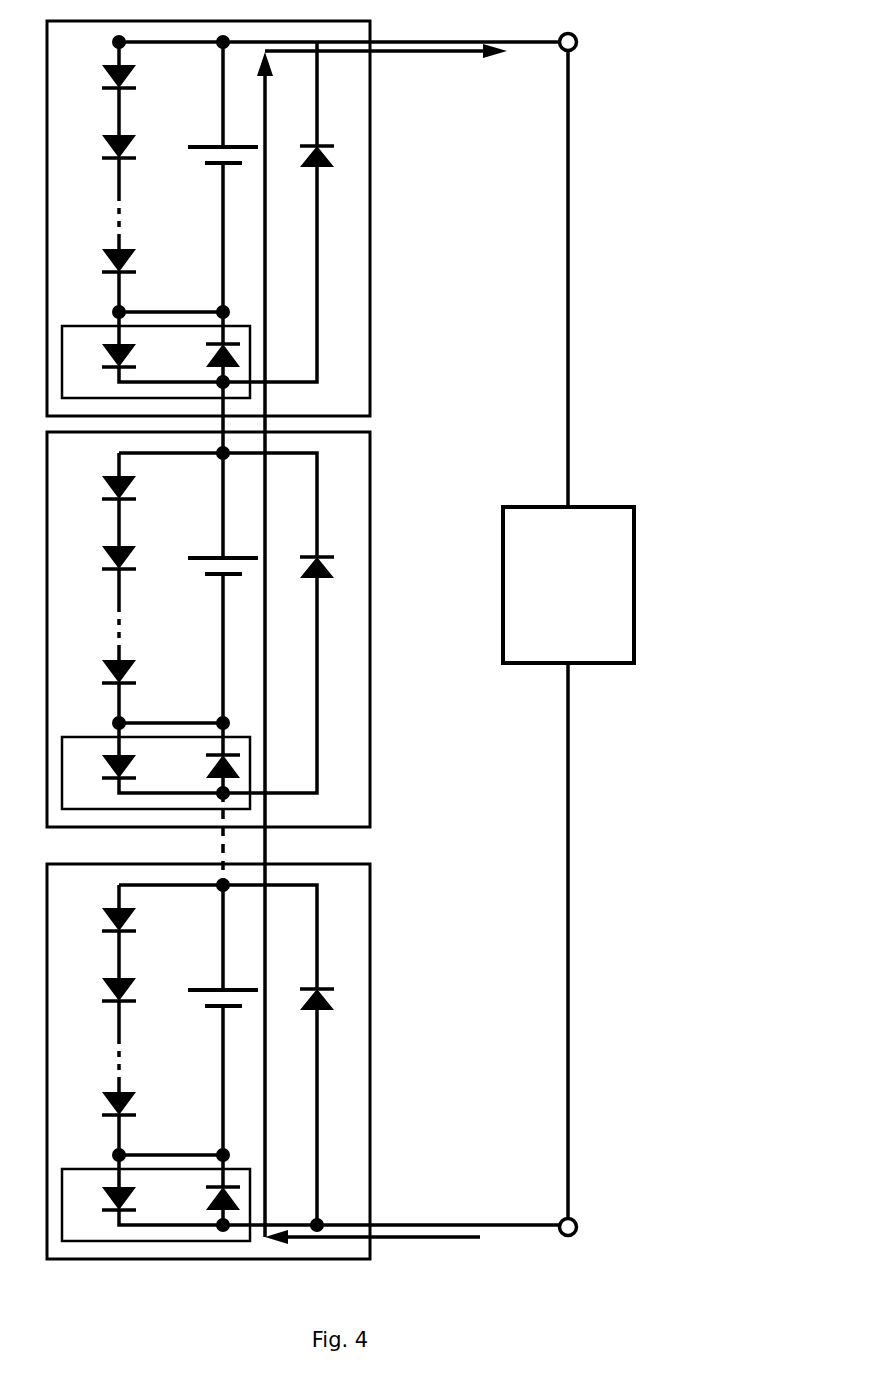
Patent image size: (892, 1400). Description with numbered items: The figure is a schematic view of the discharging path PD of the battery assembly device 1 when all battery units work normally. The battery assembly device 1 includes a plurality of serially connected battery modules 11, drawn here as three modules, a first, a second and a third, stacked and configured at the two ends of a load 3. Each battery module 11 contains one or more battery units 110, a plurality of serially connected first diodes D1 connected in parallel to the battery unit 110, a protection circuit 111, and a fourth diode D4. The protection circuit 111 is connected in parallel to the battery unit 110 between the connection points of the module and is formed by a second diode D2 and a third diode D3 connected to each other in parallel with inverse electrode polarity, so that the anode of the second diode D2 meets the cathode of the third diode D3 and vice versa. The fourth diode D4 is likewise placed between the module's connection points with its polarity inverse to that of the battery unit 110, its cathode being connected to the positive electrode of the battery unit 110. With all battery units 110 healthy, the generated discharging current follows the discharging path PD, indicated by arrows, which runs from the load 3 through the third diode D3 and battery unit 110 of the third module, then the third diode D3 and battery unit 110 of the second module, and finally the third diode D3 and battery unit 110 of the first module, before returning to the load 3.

The battery assembly device 1 is at (449, 196).
The battery module 11 is at (371, 128).
The battery unit 110 is at (204, 576).
The protection circuit 111 is at (249, 377).
The first diode D1 is at (102, 588).
The second diode D2 is at (105, 776).
The third diode D3 is at (206, 776).
The fourth diode D4 is at (303, 576).
The load 3 is at (568, 585).
The discharging path PD is at (390, 653).